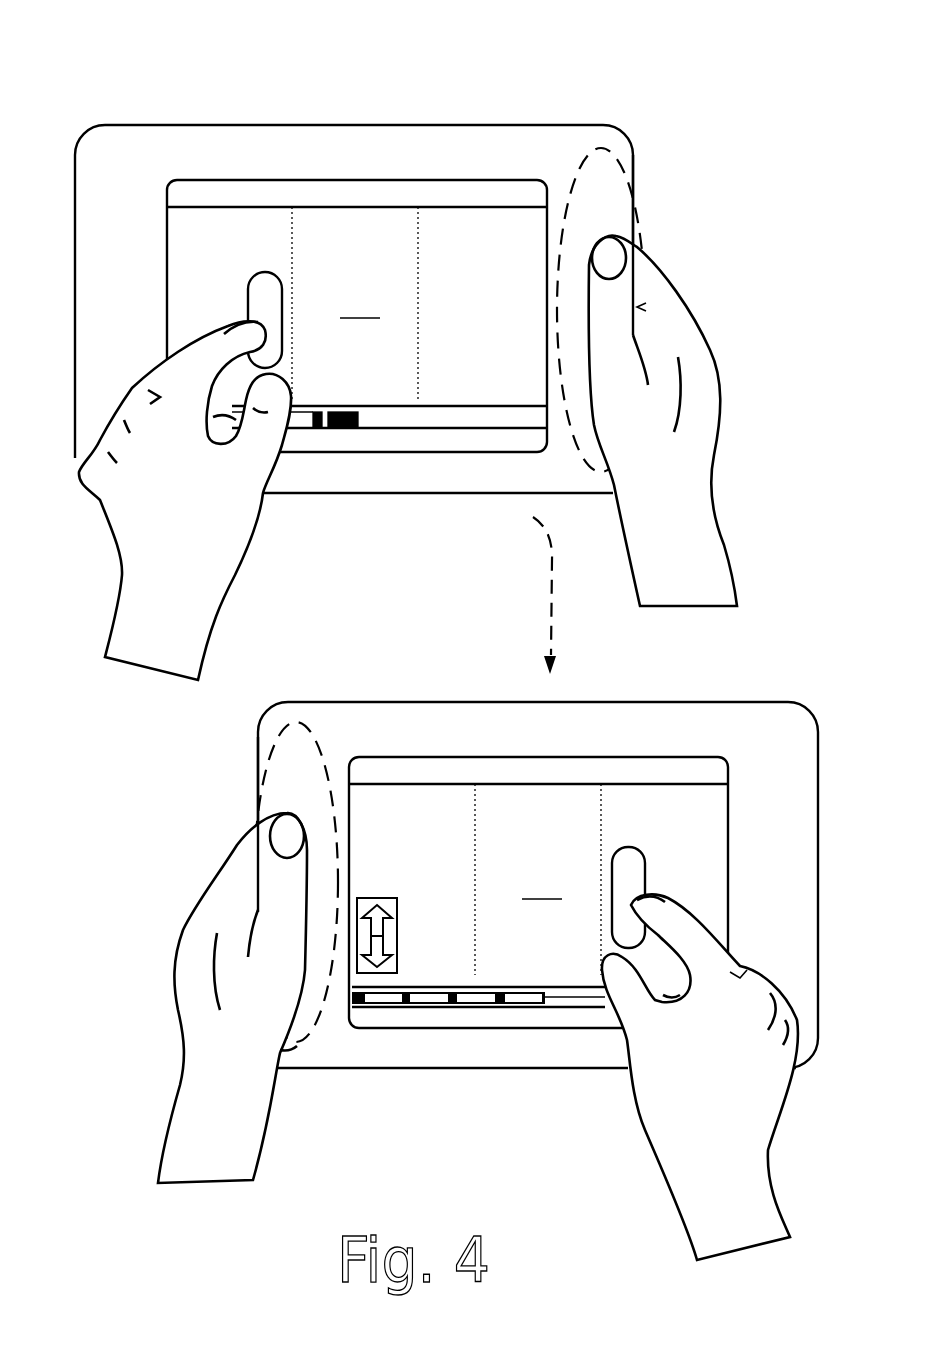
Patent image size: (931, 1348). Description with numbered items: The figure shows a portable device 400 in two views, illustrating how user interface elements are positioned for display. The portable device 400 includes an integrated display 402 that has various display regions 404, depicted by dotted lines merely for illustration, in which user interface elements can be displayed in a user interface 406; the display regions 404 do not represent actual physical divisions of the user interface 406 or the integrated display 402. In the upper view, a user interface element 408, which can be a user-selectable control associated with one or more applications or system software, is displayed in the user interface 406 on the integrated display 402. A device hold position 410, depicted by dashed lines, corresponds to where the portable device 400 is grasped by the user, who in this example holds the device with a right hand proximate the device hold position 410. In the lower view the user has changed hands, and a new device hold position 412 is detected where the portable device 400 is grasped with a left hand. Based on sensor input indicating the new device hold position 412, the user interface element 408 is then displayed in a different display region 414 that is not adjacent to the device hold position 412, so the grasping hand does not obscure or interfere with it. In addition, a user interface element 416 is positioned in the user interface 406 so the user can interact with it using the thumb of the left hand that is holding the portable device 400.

The portable device 400 is at (700, 48).
The integrated display 402 is at (227, 178).
The display regions 404 is at (258, 228).
The user interface 406 is at (452, 597).
The user interface element 408 is at (272, 293).
The device hold position 410 is at (613, 195).
The new device hold position 412 is at (300, 745).
The display region 414 is at (650, 808).
The user interface element 416 is at (402, 900).